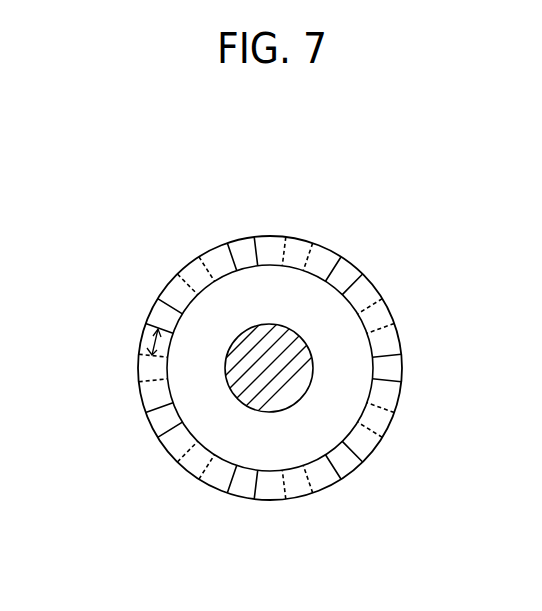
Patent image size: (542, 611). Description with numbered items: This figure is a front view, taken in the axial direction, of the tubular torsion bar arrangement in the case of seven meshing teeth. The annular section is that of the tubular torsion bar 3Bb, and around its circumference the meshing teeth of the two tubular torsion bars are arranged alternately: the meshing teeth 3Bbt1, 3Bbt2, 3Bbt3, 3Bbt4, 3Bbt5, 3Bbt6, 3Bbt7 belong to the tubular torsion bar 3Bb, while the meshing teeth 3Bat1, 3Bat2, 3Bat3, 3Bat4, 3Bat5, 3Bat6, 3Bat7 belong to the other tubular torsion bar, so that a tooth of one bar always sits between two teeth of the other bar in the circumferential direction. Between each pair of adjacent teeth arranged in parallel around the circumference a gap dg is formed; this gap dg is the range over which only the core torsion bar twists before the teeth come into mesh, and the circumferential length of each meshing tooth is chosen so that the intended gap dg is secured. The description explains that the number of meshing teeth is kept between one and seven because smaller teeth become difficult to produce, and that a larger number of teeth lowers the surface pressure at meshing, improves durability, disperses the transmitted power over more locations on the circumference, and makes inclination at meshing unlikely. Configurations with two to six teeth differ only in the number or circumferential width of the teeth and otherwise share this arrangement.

The tubular torsion bar 3Bb is at (258, 231).
The meshing tooth 3Bbt1 is at (242, 237).
The meshing tooth 3Bbt2 is at (356, 262).
The meshing tooth 3Bbt3 is at (396, 366).
The meshing tooth 3Bbt4 is at (351, 469).
The meshing tooth 3Bbt5 is at (238, 498).
The meshing tooth 3Bbt6 is at (150, 427).
The meshing tooth 3Bbt7 is at (157, 313).
The meshing tooth 3Bat1 is at (185, 262).
The meshing tooth 3Bat2 is at (298, 236).
The meshing tooth 3Bat3 is at (389, 310).
The meshing tooth 3Bat4 is at (388, 427).
The meshing tooth 3Bat5 is at (300, 499).
The meshing tooth 3Bat6 is at (185, 473).
The meshing tooth 3Bat7 is at (136, 367).
The gap dg is at (144, 338).